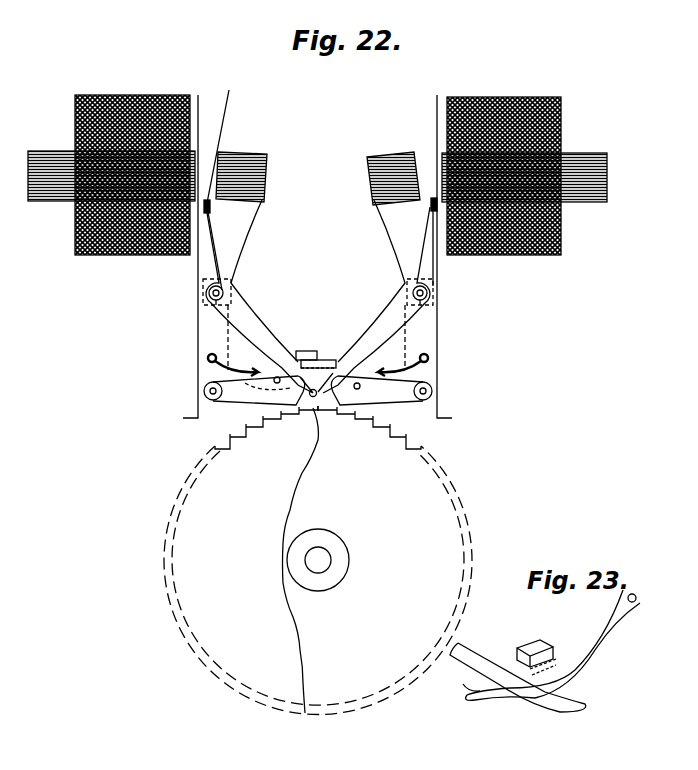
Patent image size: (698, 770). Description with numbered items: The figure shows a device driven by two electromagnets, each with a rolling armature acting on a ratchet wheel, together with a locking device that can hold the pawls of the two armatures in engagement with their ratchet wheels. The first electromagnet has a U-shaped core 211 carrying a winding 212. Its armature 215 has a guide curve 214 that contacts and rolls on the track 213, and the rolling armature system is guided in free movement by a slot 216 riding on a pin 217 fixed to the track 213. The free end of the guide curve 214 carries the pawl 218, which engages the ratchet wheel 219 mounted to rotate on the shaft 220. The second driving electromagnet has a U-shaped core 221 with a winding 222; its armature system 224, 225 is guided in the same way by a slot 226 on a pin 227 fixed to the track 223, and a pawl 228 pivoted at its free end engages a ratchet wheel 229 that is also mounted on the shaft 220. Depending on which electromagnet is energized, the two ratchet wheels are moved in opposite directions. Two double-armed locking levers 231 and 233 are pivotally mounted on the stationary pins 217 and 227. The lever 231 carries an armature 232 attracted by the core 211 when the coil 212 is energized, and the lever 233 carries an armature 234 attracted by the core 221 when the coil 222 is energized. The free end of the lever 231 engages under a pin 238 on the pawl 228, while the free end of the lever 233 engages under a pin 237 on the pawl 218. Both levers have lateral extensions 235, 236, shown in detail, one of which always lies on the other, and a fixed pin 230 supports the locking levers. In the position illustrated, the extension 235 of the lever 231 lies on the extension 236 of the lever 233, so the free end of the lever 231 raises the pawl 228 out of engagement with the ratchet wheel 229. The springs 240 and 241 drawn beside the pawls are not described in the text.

In FIG. 22, the U-shaped core 211 is at (589, 153).
In FIG. 22, the winding 212 is at (508, 92).
In FIG. 22, the track 213 is at (440, 272).
In FIG. 22, the guide curve 214 is at (425, 340).
In FIG. 22, the armature 215 is at (386, 157).
In FIG. 22, the slot 216 is at (427, 293).
In FIG. 22, the pin 217 is at (428, 298).
In FIG. 22, the pawl 218 is at (383, 397).
In FIG. 22, the ratchet wheel 219 is at (435, 482).
In FIG. 22, the shaft 220 is at (331, 557).
In FIG. 22, the U-shaped core 221 is at (44, 151).
In FIG. 22, the winding 222 is at (137, 94).
In FIG. 22, the track 223 is at (198, 258).
In FIG. 22, the armature system 224 is at (212, 334).
In FIG. 22, the armature system 225 is at (243, 153).
In FIG. 22, the slot 226 is at (210, 292).
In FIG. 22, the pin 227 is at (214, 298).
In FIG. 22, the pawl 228 is at (243, 393).
In FIG. 22, the ratchet wheel 229 is at (183, 516).
In FIG. 22, the fixed pin 230 is at (313, 398).
In FIG. 22, the locking lever 231 is at (392, 322).
In FIG. 23, the locking lever 231 is at (614, 630).
In FIG. 22, the armature 232 is at (432, 198).
In FIG. 22, the locking lever 233 is at (250, 325).
In FIG. 23, the locking lever 233 is at (470, 657).
In FIG. 22, the armature 234 is at (229, 182).
In FIG. 22, the lateral extension 235 is at (306, 350).
In FIG. 23, the lateral extension 235 is at (538, 643).
In FIG. 22, the lateral extension 236 is at (330, 358).
In FIG. 23, the lateral extension 236 is at (556, 655).
In FIG. 22, the pin 237 is at (433, 390).
In FIG. 22, the pin 238 is at (204, 390).
In FIG. 22, the pawl spring 240 is at (208, 358).
In FIG. 22, the pawl spring 241 is at (428, 360).